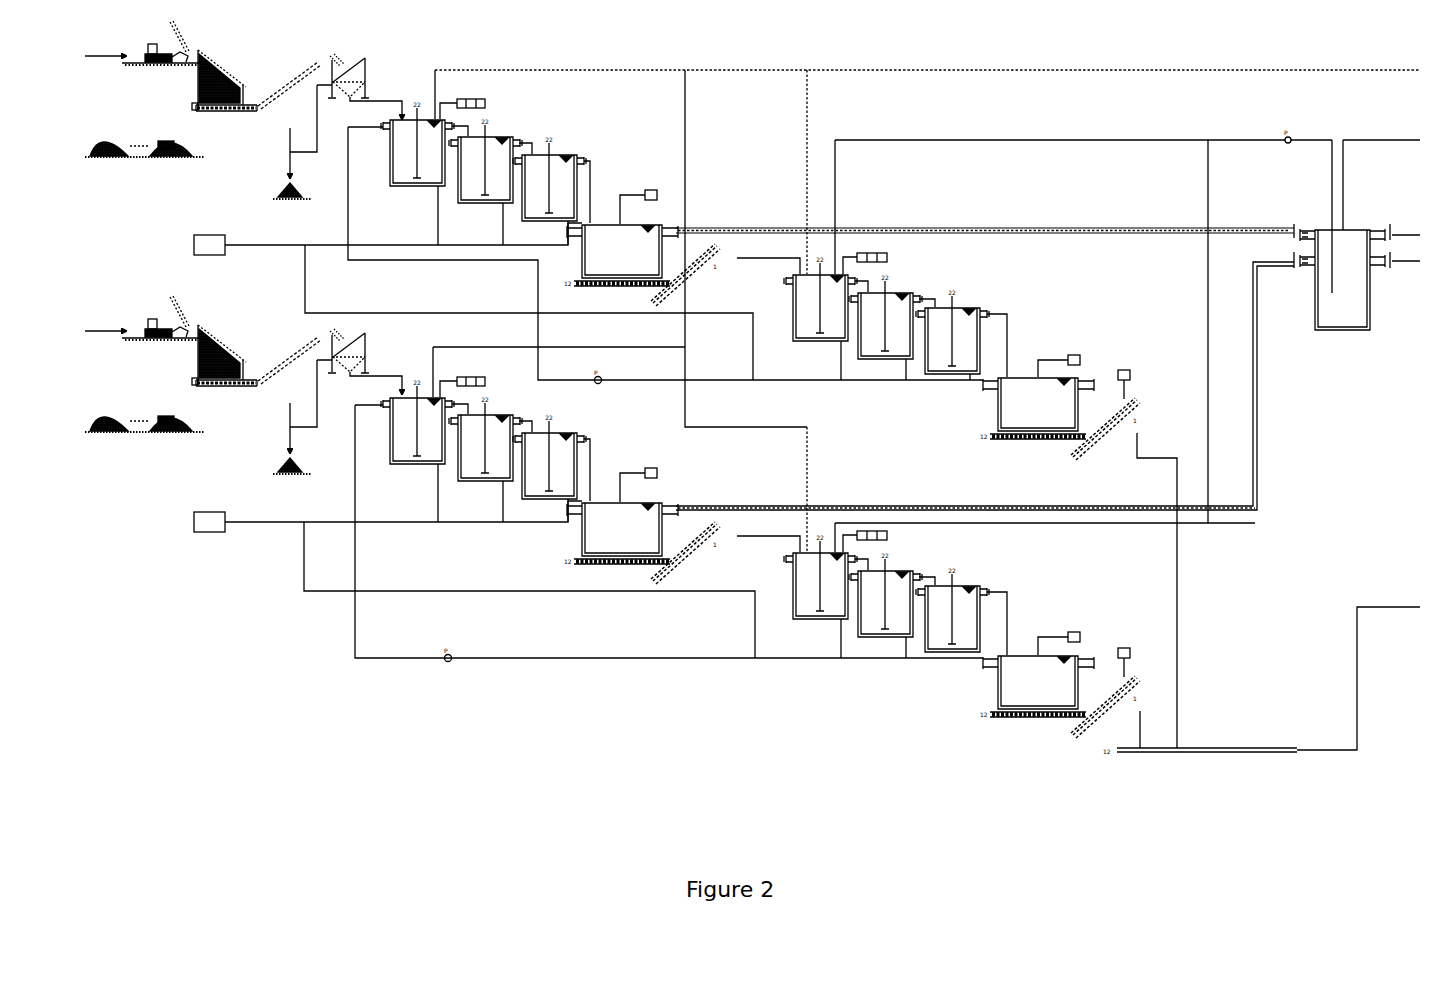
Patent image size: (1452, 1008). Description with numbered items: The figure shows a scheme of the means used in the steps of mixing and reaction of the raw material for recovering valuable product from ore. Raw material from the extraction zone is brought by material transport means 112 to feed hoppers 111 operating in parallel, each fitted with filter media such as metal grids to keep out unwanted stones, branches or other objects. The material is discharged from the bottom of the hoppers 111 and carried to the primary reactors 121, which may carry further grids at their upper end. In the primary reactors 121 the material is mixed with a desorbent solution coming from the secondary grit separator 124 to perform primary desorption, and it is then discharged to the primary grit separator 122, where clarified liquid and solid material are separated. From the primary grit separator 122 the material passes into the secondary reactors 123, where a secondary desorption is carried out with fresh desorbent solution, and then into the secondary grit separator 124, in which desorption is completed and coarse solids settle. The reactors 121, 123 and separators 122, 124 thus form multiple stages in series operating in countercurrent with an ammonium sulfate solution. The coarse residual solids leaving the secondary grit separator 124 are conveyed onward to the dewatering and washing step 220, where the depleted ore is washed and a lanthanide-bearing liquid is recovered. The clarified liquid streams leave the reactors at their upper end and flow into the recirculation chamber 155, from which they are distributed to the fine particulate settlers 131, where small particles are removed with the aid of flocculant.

The feed hopper 111 is at (346, 247).
The material transport means 112 is at (203, 246).
The primary reactor 121 is at (485, 310).
The primary grit separator 122 is at (642, 387).
The secondary reactor 123 is at (895, 455).
The secondary grit separator 124 is at (1060, 546).
The fine particulate settler 131 is at (1408, 246).
The recirculation chamber 155 is at (1332, 235).
The washing step 220 is at (1372, 442).